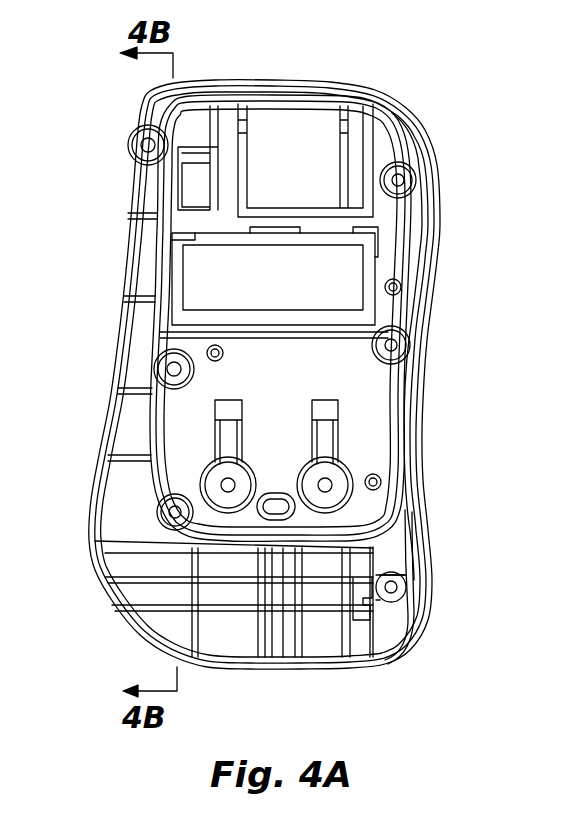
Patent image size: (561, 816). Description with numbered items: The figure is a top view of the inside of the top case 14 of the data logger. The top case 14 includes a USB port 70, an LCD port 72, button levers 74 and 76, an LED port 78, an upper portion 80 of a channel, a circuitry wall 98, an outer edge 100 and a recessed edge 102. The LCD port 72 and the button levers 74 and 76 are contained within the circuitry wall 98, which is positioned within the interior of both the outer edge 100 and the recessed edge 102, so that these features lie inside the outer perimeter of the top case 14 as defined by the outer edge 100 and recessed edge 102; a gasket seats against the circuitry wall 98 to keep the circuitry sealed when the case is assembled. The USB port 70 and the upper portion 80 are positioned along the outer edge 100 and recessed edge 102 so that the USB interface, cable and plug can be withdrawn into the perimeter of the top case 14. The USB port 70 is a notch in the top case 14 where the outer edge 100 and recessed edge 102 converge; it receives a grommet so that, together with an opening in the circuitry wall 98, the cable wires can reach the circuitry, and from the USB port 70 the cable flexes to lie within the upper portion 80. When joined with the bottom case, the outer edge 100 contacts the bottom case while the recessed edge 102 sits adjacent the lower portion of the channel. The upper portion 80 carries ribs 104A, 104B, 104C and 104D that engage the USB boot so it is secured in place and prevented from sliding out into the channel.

The top case 14 is at (298, 77).
The outer edge 100 is at (388, 118).
The USB port 70 is at (128, 192).
The circuitry wall 98 is at (155, 282).
The LCD port 72 is at (245, 245).
The button lever 74 is at (332, 477).
The button lever 76 is at (223, 472).
The LED port 78 is at (292, 517).
The upper portion of channel 80 is at (127, 515).
The recessed edge 102 is at (122, 622).
The rib 104A is at (302, 632).
The rib 104B is at (352, 633).
The rib 104C is at (380, 615).
The rib 104D is at (270, 633).